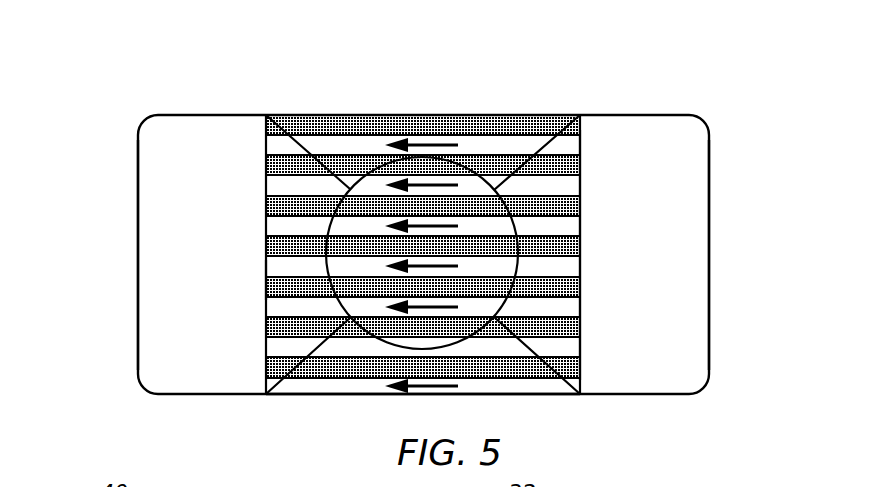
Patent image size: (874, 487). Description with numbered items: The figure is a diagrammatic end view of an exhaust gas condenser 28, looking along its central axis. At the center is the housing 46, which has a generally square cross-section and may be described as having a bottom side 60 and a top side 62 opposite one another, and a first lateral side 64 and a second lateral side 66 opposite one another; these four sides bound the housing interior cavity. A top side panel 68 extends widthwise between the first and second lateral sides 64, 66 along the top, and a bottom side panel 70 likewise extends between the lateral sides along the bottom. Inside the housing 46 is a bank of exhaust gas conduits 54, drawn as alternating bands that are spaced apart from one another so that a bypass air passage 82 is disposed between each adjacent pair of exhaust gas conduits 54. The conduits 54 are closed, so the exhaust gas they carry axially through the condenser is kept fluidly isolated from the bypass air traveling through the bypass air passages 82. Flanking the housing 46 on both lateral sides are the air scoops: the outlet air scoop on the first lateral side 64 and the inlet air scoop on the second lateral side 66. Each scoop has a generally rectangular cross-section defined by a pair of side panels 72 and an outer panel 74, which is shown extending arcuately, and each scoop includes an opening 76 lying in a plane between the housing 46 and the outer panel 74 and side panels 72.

The exhaust gas condenser 28 is at (768, 56).
The side panels 72 is at (218, 115).
The outer panel 74 is at (138, 252).
The housing 46 is at (560, 90).
The top side 62 is at (447, 84).
The bypass air passage 82 is at (572, 228).
The top side panel 68 is at (338, 115).
The exhaust gas conduits 54 is at (277, 247).
The bottom side 60 is at (338, 410).
The bottom side panel 70 is at (537, 397).
The opening 76 is at (658, 226).
The second lateral side 66 is at (598, 271).
The first lateral side 64 is at (256, 280).